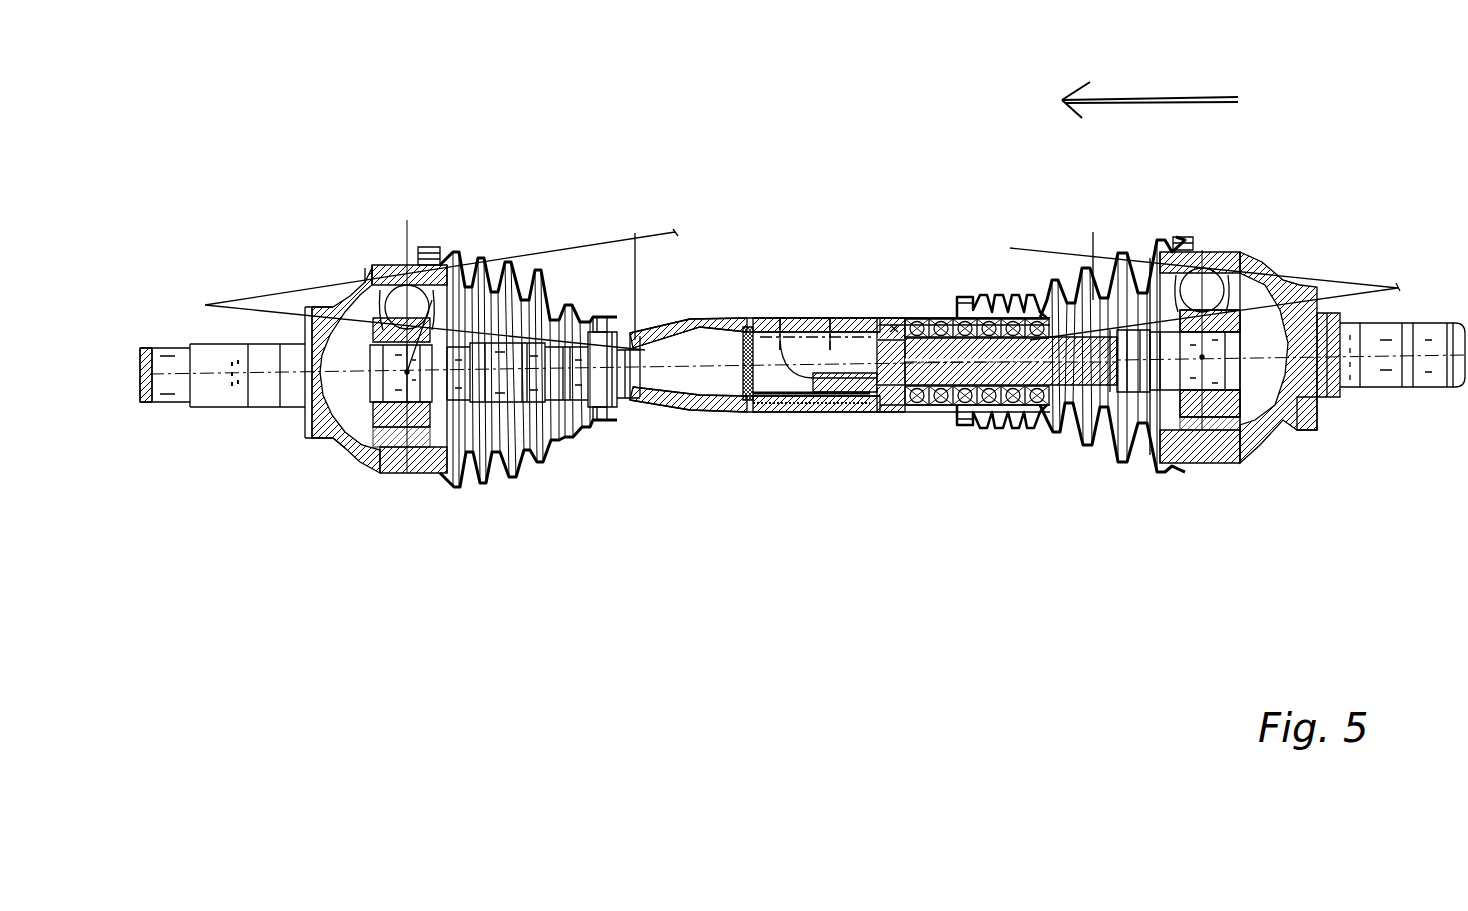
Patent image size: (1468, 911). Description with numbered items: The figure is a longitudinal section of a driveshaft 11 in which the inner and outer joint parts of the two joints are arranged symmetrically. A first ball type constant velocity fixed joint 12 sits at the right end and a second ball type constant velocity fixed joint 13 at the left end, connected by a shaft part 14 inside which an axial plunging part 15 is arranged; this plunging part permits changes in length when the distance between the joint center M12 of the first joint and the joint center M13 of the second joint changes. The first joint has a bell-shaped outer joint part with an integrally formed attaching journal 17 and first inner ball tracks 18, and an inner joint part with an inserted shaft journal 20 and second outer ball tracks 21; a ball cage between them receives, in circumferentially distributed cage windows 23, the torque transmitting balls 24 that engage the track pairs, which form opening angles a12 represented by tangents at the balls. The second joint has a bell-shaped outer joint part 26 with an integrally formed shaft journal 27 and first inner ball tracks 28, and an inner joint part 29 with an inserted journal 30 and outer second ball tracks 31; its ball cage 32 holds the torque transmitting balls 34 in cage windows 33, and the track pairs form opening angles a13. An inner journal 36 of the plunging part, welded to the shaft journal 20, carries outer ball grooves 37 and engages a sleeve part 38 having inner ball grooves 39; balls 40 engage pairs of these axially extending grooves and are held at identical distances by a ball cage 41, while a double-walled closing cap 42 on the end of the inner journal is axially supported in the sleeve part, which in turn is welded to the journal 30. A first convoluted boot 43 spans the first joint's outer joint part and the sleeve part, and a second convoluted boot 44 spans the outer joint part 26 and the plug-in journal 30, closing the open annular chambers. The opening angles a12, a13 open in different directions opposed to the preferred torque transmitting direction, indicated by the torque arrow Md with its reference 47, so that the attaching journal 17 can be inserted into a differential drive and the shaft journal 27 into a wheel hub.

The driveshaft 11 is at (838, 168).
The first ball type constant velocity fixed joint 12 is at (1313, 203).
The second ball type constant velocity fixed joint 13 is at (438, 196).
The shaft part 14 is at (751, 243).
The axial plunging part 15 is at (821, 293).
The attaching journal 17 is at (1413, 323).
The first inner ball tracks 18 is at (1167, 250).
The shaft journal 20 is at (1135, 400).
The second outer ball tracks 21 is at (1202, 357).
The cage windows 23 is at (1213, 252).
The torque transmitting balls 24 is at (1200, 250).
The bell-shaped outer joint part 26 is at (402, 460).
The shaft journal 27 is at (238, 400).
The first inner ball tracks 28 is at (463, 253).
The inner joint part 29 is at (432, 457).
The inserted journal 30 is at (515, 385).
The outer second ball tracks 31 is at (368, 300).
The ball cage 32 is at (390, 453).
The cage windows 33 is at (390, 262).
The torque transmitting balls 34 is at (433, 247).
The inner journal 36 is at (1063, 430).
The outer ball grooves 37 is at (1022, 428).
The sleeve part 38 is at (845, 412).
The inner ball grooves 39 is at (888, 412).
The balls 40 is at (975, 415).
The ball cage 41 is at (950, 412).
The double-walled closing cap 42 is at (748, 402).
The first convoluted boot 43 is at (1100, 420).
The second convoluted boot 44 is at (535, 430).
The torque direction arrow 47 is at (1155, 98).
The joint center of the second ball type constant velocity fixed joint M13 is at (337, 457).
The joint center of the first ball type constant velocity fixed joint M12 is at (1280, 278).
The opening angles a13 is at (441, 289).
The opening angles a12 is at (1205, 286).
The torque Md is at (1225, 76).